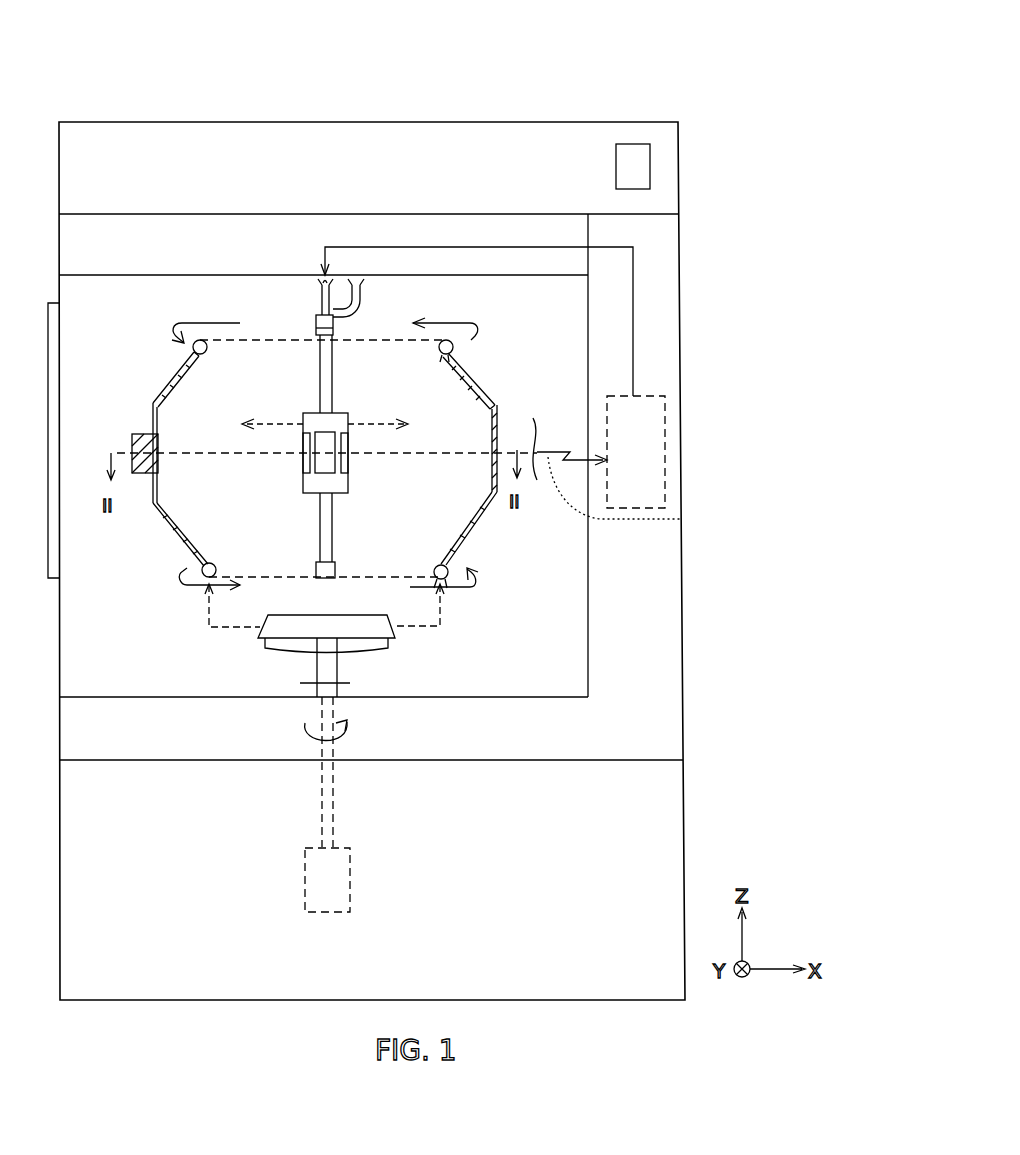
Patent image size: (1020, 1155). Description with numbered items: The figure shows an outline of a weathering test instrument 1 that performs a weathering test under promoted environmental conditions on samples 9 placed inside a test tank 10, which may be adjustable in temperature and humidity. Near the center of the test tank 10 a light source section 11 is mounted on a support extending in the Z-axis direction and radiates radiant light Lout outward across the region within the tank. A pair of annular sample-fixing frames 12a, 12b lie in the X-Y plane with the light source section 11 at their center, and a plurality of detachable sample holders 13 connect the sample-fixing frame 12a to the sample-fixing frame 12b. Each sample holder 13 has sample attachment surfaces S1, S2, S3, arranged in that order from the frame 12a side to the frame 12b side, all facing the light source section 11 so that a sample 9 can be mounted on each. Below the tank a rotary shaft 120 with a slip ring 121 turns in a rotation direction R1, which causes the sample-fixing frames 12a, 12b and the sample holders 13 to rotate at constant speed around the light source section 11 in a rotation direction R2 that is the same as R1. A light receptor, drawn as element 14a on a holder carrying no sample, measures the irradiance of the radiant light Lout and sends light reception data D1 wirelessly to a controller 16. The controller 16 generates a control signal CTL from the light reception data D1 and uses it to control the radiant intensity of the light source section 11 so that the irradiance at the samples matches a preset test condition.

The weathering test instrument 1 is at (577, 60).
The test tank 10 is at (226, 296).
The sample 9 is at (180, 377).
The sample holder 13 is at (153, 417).
The sample-fixing frame 12a is at (454, 346).
The sample-fixing frame 12b is at (447, 577).
The sensor block 14a is at (143, 474).
The light source section 11 is at (300, 500).
The controller 16 is at (668, 452).
The rotary shaft 120 is at (320, 803).
The slip ring 121 is at (305, 882).
The control signal CTL is at (634, 320).
The light reception data D1 is at (680, 519).
The rotation direction R1 is at (350, 727).
The rotation direction R2 is at (210, 323).
The sample attachment surface S1 is at (205, 355).
The sample attachment surface S2 is at (160, 487).
The sample attachment surface S3 is at (200, 560).
The radiant light Lout is at (320, 427).